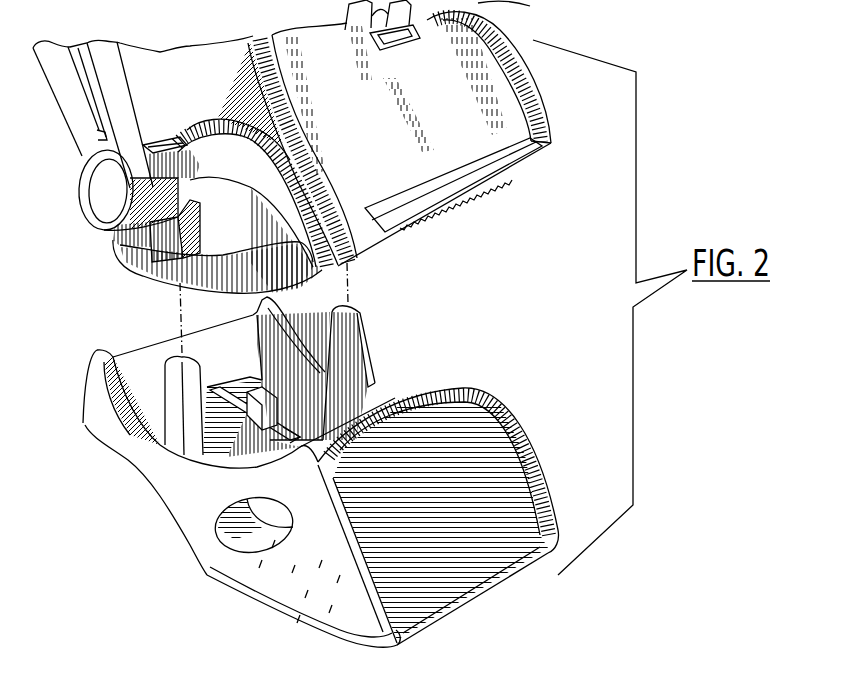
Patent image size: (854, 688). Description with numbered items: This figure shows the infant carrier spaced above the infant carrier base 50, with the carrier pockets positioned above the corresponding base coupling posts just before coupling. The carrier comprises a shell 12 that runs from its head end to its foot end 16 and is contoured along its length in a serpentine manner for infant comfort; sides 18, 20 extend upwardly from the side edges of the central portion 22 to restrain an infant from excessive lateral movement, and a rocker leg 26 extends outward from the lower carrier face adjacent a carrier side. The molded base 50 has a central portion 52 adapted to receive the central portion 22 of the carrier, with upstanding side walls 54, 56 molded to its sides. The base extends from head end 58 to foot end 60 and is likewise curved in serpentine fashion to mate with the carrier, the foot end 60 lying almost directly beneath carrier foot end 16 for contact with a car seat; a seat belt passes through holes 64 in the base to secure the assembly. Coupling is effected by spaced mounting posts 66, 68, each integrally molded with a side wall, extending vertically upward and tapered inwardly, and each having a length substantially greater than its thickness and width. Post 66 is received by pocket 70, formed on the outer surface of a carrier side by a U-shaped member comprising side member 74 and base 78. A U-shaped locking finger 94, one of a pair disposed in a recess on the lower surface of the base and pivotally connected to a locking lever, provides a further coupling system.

The shell 12 is at (539, 101).
The foot end 16 is at (521, 155).
The side 18 is at (371, 100).
The side 20 is at (222, 224).
The central portion 22 is at (180, 90).
The rocker leg 26 is at (120, 262).
The infant carrier base 50 is at (320, 470).
The central portion 52 is at (147, 387).
The side wall 54 is at (212, 524).
The side wall 56 is at (363, 403).
The head end 58 is at (137, 351).
The foot end 60 is at (507, 577).
The holes 64 is at (225, 535).
The mounting post 66 is at (180, 393).
The mounting post 68 is at (337, 340).
The pocket 70 is at (193, 230).
The side member 74 is at (150, 240).
The base 78 is at (147, 271).
The locking finger 94 is at (280, 345).